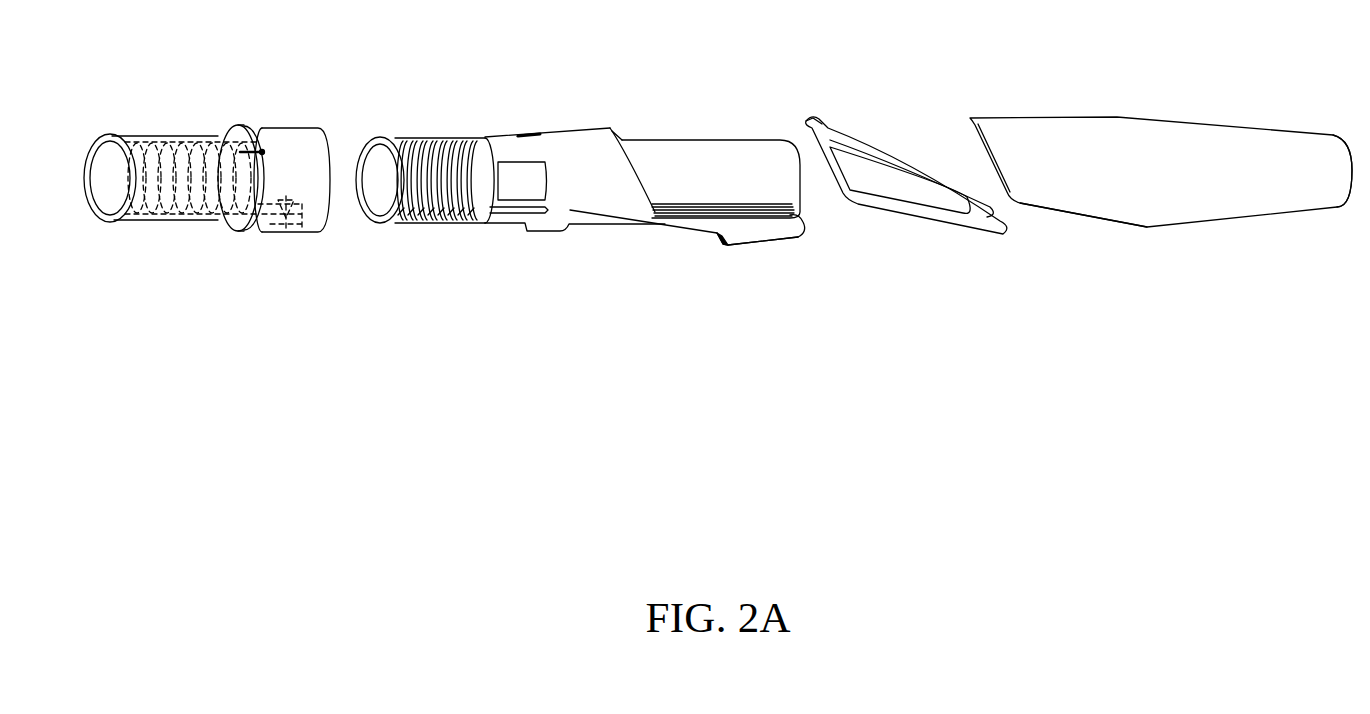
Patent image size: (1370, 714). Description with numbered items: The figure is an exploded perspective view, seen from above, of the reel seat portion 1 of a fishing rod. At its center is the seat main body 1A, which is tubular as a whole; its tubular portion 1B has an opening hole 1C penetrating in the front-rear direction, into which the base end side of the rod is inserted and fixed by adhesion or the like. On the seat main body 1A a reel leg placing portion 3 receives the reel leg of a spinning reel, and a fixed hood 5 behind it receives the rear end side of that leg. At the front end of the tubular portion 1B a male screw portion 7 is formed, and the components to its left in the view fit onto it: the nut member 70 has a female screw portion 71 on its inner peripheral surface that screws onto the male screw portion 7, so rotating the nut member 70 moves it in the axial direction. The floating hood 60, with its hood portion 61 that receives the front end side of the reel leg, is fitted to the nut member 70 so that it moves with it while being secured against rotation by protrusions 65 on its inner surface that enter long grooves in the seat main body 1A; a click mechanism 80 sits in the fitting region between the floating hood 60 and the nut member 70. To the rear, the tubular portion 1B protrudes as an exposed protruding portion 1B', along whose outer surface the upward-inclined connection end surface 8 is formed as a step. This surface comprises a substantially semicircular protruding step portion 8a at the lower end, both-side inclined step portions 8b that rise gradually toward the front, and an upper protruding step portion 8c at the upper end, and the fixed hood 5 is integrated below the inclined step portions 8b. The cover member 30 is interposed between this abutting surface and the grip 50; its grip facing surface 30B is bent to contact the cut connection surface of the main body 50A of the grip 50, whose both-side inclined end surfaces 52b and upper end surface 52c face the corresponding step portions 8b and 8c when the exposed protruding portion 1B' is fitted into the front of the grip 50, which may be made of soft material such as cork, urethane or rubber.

The reel seat portion 1 is at (679, 41).
The seat main body 1A is at (683, 117).
The tubular portion 1B is at (570, 144).
The exposed protruding portion 1B' is at (713, 154).
The opening hole 1C is at (387, 180).
The reel leg placing portion 3 is at (623, 223).
The fixed hood 5 is at (770, 243).
The male screw portion 7 is at (438, 138).
The connection end surface 8 is at (707, 223).
The protruding step portion 8a is at (800, 212).
The both-side inclined step portions 8b is at (753, 225).
The upper protruding step portion 8c is at (628, 148).
The cover member 30 is at (900, 137).
The grip facing surface 30B is at (868, 143).
The grip 50 is at (1232, 237).
The main body of the grip 50A is at (1313, 185).
The both-side inclined end surfaces 52b is at (1092, 222).
The upper end surface 52c is at (967, 120).
The floating hood 60 is at (287, 122).
The hood portion 61 is at (287, 232).
The protrusions 65 is at (262, 148).
The nut member 70 is at (145, 227).
The female screw portion 71 is at (172, 222).
The click mechanism 80 is at (249, 233).